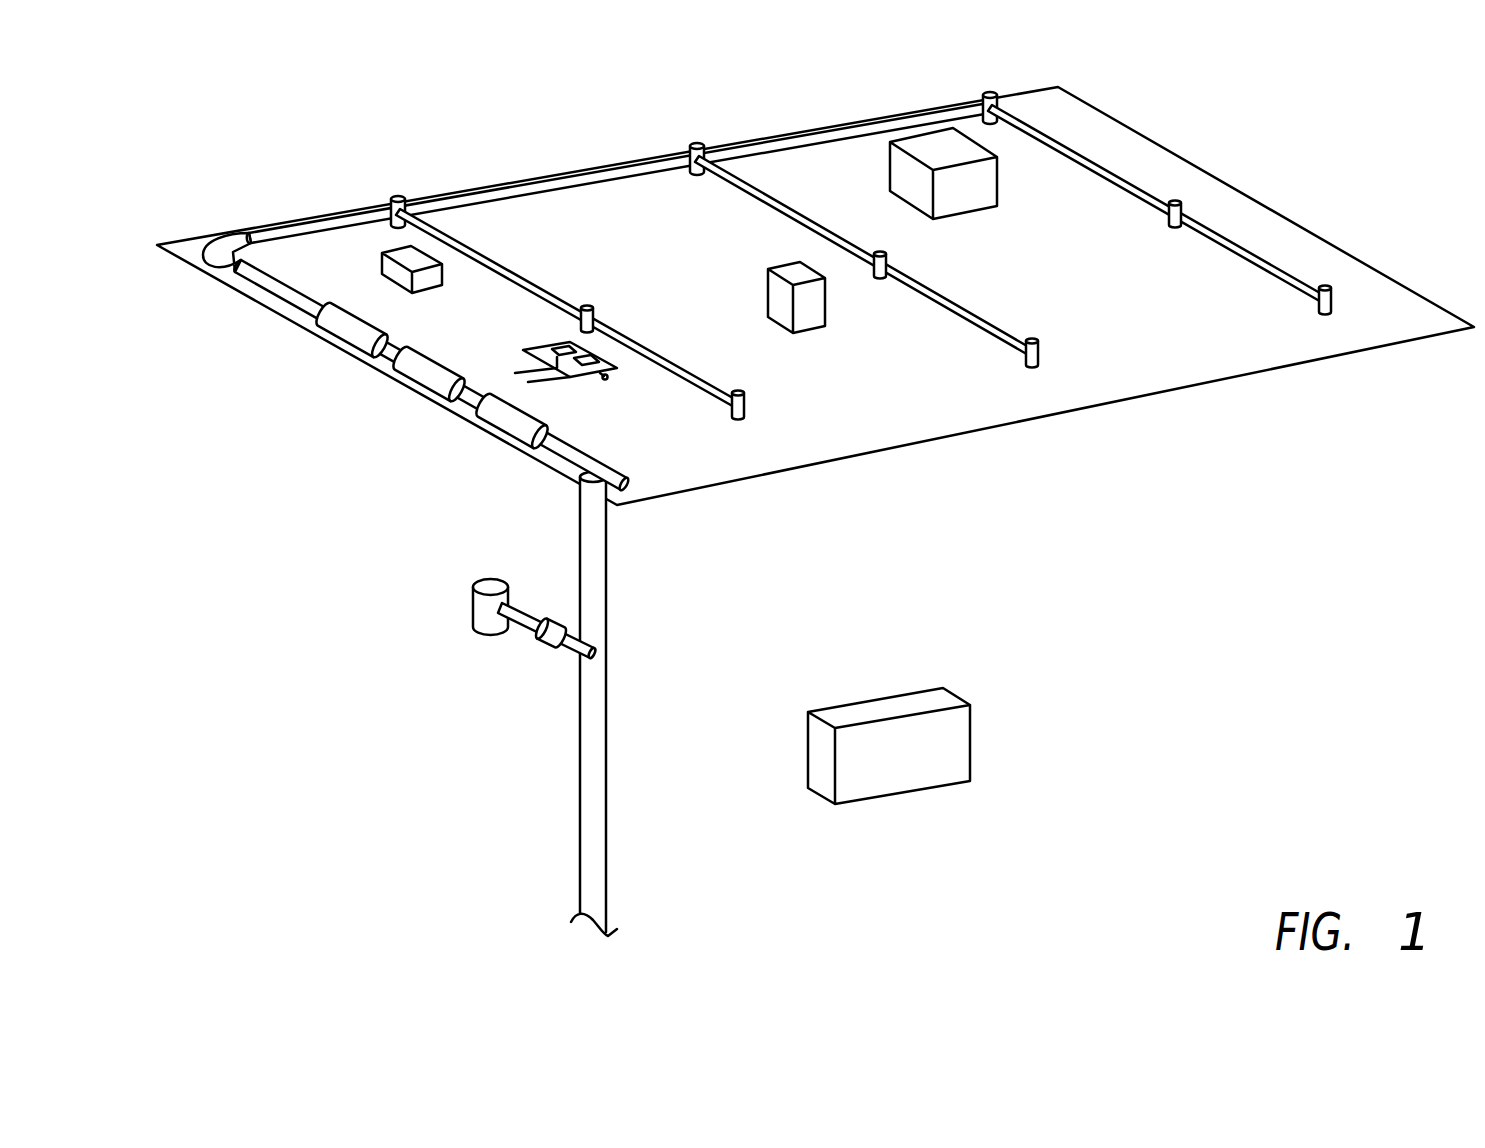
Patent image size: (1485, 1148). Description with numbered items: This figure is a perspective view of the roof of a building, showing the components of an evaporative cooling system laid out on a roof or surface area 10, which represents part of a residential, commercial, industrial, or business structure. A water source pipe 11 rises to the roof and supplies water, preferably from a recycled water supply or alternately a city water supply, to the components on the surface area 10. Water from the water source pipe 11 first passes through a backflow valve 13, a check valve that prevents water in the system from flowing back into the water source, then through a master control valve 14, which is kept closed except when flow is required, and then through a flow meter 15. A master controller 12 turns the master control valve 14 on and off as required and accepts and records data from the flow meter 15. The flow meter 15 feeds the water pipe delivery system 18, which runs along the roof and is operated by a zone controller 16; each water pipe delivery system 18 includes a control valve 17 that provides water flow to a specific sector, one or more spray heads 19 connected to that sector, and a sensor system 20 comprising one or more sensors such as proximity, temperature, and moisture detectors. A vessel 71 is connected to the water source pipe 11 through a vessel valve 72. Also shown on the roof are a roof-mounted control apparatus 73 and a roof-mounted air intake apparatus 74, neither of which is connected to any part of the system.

The roof or surface area 10 is at (828, 462).
The water source pipe 11 is at (603, 675).
The master controller 12 is at (972, 740).
The backflow valve 13 is at (503, 422).
The master control valve 14 is at (425, 377).
The flow meter 15 is at (341, 330).
The zone controller 16 is at (381, 262).
The control valve 17 is at (399, 198).
The water pipe delivery system 18 is at (598, 166).
The spray head 19 is at (600, 308).
The sensor system 20 is at (527, 362).
The vessel 71 is at (472, 609).
The vessel valve 72 is at (546, 643).
The roof-mounted control apparatus 73 is at (998, 183).
The roof-mounted air intake apparatus 74 is at (826, 303).